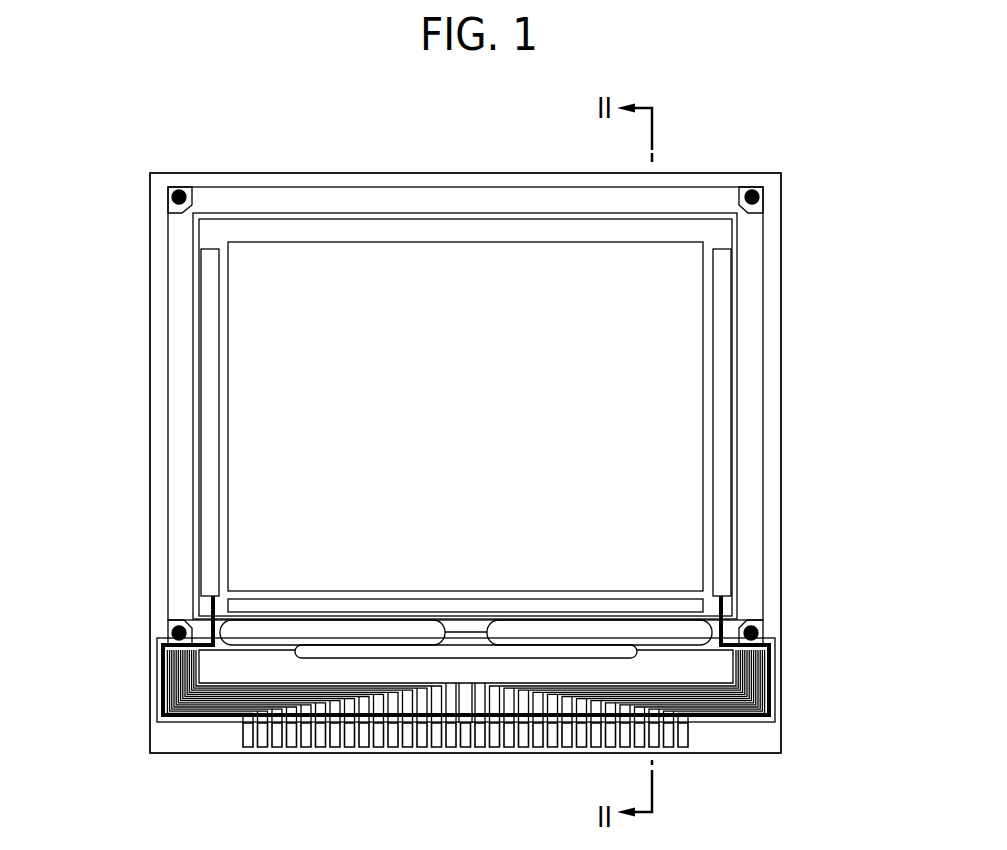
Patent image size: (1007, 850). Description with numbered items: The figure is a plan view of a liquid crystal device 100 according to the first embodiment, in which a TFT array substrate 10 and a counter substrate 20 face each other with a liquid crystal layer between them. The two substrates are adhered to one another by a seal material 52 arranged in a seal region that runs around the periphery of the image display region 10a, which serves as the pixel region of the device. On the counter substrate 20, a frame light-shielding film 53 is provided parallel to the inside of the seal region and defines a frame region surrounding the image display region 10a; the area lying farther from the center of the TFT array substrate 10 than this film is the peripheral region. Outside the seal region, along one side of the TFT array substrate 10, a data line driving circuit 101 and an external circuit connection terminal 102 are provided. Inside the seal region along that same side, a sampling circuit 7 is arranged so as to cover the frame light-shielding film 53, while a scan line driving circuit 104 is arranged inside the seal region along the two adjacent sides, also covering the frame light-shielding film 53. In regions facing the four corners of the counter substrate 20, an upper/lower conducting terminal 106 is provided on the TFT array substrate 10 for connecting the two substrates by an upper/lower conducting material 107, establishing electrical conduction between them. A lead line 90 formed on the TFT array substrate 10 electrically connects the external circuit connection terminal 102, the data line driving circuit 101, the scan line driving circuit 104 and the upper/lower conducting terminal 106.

The liquid crystal device 100 is at (731, 108).
The TFT array substrate 10 is at (284, 186).
The counter substrate 20 is at (488, 187).
The image display region 10a is at (272, 365).
The seal material 52 is at (750, 343).
The scan line driving circuit 104 is at (722, 417).
The sampling circuit 7 is at (320, 610).
The frame light-shielding film 53 is at (730, 597).
The upper/lower conducting terminal 106 is at (170, 212).
The upper/lower conducting material 107 is at (167, 628).
The lead line 90 is at (162, 695).
The data line driving circuit 101 is at (222, 676).
The external circuit connection terminal 102 is at (427, 730).